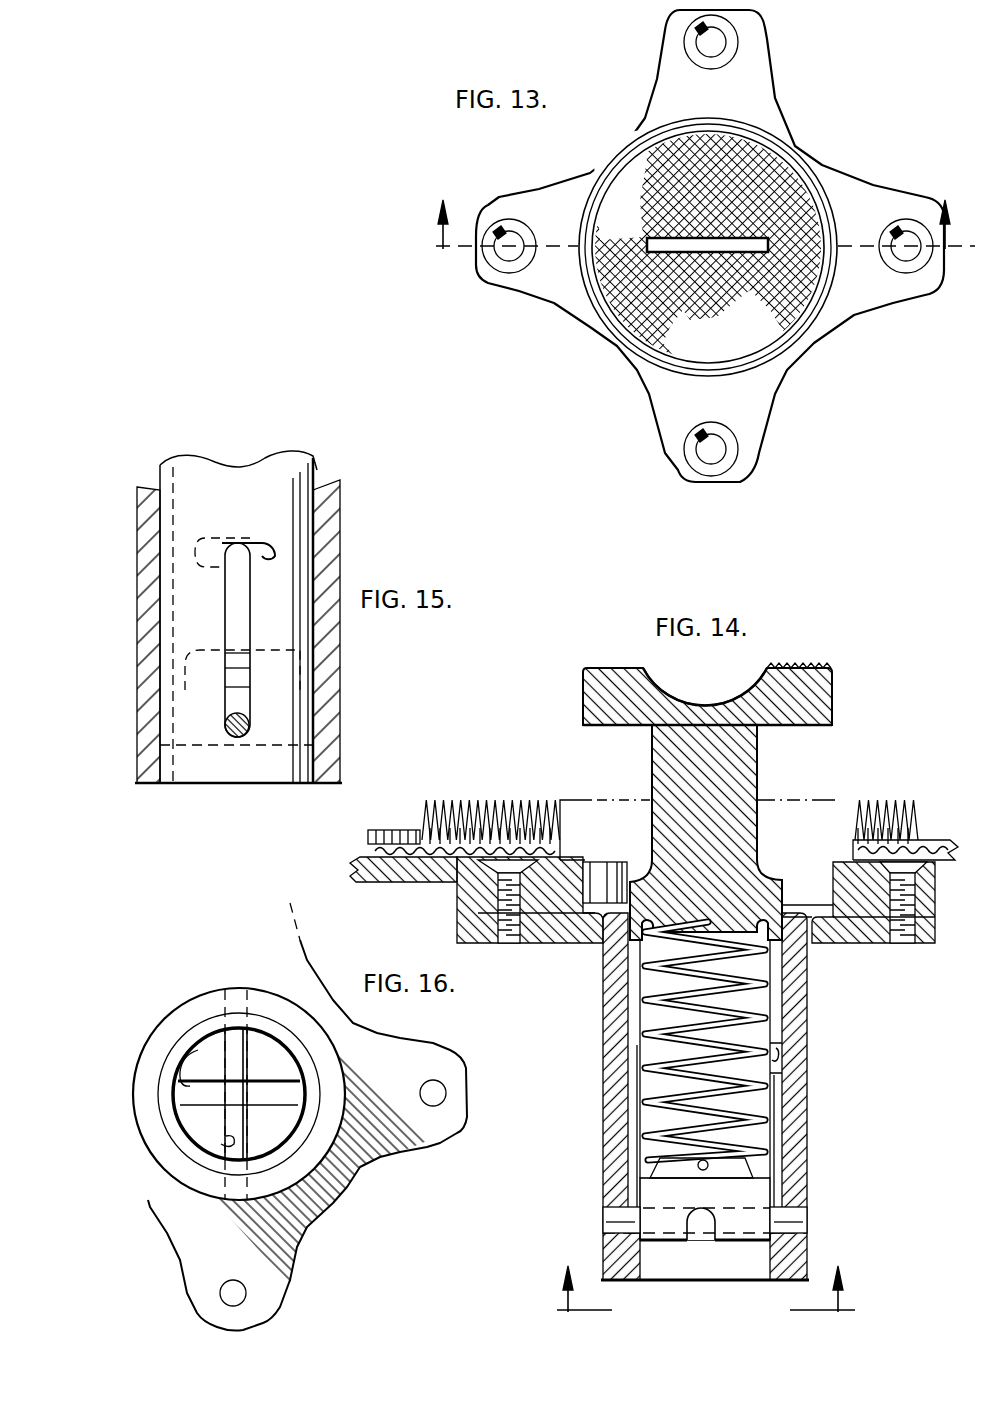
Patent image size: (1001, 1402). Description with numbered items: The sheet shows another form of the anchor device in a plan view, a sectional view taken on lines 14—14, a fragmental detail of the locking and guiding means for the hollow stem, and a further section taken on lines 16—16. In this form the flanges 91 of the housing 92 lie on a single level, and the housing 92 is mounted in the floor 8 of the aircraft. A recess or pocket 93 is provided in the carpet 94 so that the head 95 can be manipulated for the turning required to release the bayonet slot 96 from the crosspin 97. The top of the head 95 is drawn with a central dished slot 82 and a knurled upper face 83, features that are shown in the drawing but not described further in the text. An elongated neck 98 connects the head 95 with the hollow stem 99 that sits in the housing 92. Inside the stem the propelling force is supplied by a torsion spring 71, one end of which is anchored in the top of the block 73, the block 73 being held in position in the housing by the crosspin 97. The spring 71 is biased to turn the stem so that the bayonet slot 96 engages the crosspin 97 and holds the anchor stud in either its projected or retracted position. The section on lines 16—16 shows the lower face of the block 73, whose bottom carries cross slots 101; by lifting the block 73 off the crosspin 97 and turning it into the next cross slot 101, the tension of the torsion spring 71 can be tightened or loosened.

In FIG. 14, the floor 8 is at (404, 872).
In FIG. 13, the section lines 14— 14 is at (704, 207).
In FIG. 14, the section lines 16— 16 is at (705, 1275).
In FIG. 14, the torsion spring 71 is at (764, 1090).
In FIG. 15, the block 73 is at (300, 660).
In FIG. 16, the block 73 is at (280, 1063).
In FIG. 14, the block 73 is at (757, 1192).
In FIG. 13, the dished recess / slot 82 is at (648, 236).
In FIG. 14, the dished recess / slot 82 is at (742, 686).
In FIG. 13, the knurled cap face 83 is at (773, 170).
In FIG. 14, the knurled cap face 83 is at (808, 668).
In FIG. 13, the flanges 91 is at (540, 292).
In FIG. 16, the flanges 91 is at (437, 1054).
In FIG. 14, the flanges 91 is at (550, 905).
In FIG. 15, the housing 92 is at (320, 512).
In FIG. 16, the housing 92 is at (183, 1010).
In FIG. 14, the housing 92 is at (797, 982).
In FIG. 14, the recess or pocket 93 is at (843, 827).
In FIG. 14, the carpet 94 is at (888, 806).
In FIG. 13, the head 95 is at (733, 366).
In FIG. 14, the head 95 is at (833, 708).
In FIG. 15, the bayonet slot 96 is at (268, 560).
In FIG. 14, the bayonet slot 96 is at (784, 1060).
In FIG. 15, the crosspin 97 is at (257, 716).
In FIG. 16, the crosspin 97 is at (238, 1122).
In FIG. 14, the crosspin 97 is at (793, 1224).
In FIG. 14, the elongated neck 98 is at (748, 762).
In FIG. 15, the hollow stem 99 is at (300, 468).
In FIG. 14, the hollow stem 99 is at (779, 1014).
In FIG. 16, the cross slots 101 is at (198, 1052).
In FIG. 14, the cross slots 101 is at (706, 1242).